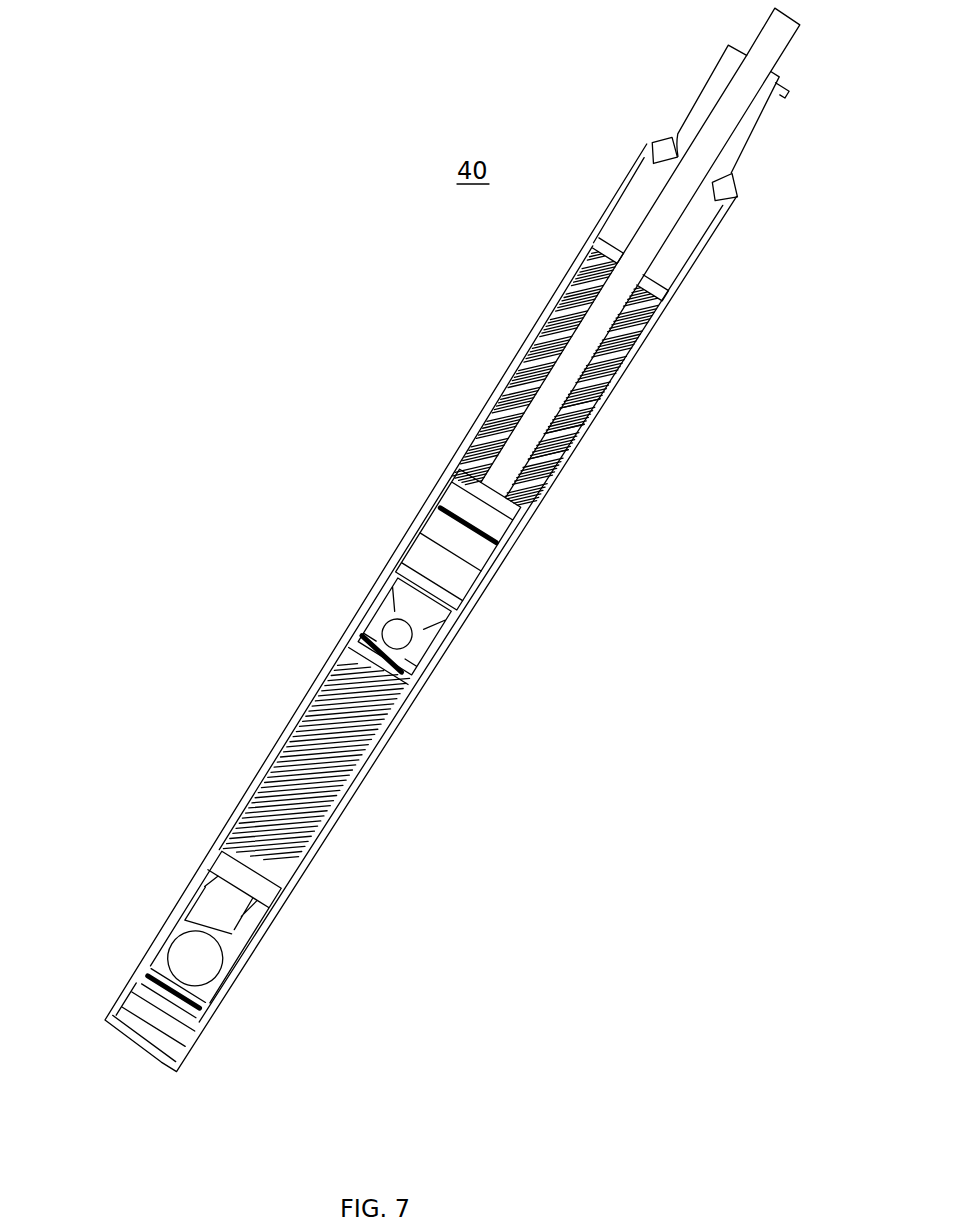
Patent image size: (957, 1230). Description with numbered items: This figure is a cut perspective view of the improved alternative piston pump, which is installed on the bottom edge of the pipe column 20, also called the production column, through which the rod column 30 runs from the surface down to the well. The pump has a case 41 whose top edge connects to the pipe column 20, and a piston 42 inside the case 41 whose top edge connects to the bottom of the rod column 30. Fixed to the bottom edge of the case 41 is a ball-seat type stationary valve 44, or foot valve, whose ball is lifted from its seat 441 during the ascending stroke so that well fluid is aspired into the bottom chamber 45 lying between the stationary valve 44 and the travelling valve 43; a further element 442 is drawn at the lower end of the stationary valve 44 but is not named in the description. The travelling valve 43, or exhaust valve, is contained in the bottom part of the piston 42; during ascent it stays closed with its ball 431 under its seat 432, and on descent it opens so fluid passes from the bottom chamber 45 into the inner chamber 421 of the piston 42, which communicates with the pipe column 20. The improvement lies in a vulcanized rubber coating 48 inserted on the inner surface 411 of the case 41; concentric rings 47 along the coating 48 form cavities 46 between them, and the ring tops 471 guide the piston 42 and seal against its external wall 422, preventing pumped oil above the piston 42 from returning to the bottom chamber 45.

The pipe column 20 is at (718, 103).
The rod column 30 is at (655, 224).
The case 41 is at (563, 283).
The inner surface of the case 411 is at (537, 344).
The piston 42 is at (483, 518).
The inner chamber of the piston 421 is at (443, 565).
The external wall of the piston 422 is at (403, 548).
The travelling valve 43 is at (412, 642).
The ball of the travelling valve 431 is at (393, 660).
The seat of the travelling valve 432 is at (385, 638).
The stationary valve 44 is at (232, 978).
The seat of the stationary valve 441 is at (185, 953).
The retaining ring 442 is at (167, 998).
The bottom chamber 45 is at (317, 765).
The cavities 46 is at (628, 349).
The concentric rings 47 is at (583, 412).
The tops of the concentric rings 471 is at (562, 435).
The coating 48 is at (510, 405).